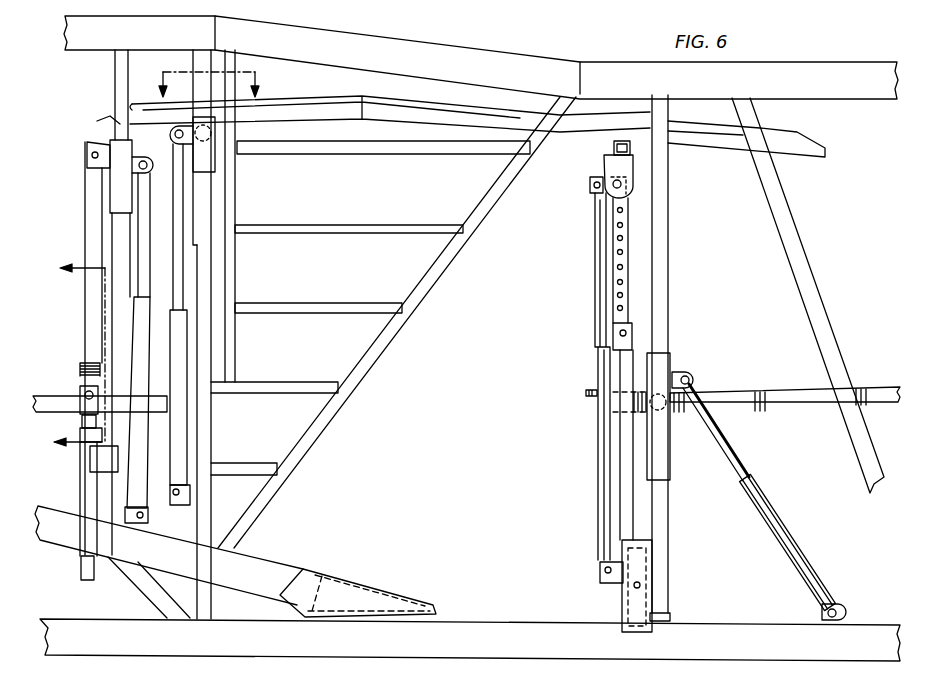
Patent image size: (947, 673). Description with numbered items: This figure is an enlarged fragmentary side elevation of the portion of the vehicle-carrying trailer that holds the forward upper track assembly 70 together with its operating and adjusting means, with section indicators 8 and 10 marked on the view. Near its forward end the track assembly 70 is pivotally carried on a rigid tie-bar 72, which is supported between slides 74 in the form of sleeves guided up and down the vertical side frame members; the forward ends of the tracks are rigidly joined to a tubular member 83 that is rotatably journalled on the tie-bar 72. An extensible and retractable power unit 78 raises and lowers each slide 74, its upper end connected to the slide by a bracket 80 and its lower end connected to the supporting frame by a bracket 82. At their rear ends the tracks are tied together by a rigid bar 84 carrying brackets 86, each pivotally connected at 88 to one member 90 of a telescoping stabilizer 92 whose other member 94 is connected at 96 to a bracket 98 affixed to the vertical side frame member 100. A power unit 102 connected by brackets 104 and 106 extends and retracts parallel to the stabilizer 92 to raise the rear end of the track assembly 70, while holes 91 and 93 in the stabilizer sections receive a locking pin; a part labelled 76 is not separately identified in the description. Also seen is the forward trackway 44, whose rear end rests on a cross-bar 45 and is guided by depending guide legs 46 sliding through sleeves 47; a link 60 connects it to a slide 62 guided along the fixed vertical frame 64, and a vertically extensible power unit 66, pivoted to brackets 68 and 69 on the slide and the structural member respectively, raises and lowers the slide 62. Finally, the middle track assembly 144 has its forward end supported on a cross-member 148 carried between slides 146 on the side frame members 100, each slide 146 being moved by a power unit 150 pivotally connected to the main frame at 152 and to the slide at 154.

The section line 8- 8 is at (207, 84).
The section line 10- 10 is at (71, 356).
The forward track assembly 44 is at (48, 400).
The cross-bar 45 is at (80, 418).
The guide legs 46 is at (80, 567).
The sleeves 47 is at (85, 520).
The link 60 is at (88, 193).
The slide 62 is at (118, 170).
The fixed vertical frame 64 is at (117, 82).
The power unit 66 is at (138, 320).
The bracket 68 is at (140, 155).
The bracket 69 is at (132, 517).
The forward upper track assembly 70 is at (410, 103).
The tie-bar 72 is at (237, 130).
The slides 74 is at (207, 210).
The lower post section 76 is at (205, 288).
The power unit 78 is at (180, 362).
The bracket 80 is at (190, 145).
The bracket 82 is at (192, 490).
The tubular member 83 is at (240, 163).
The rigid bar 84 is at (633, 148).
The brackets 86 is at (607, 163).
The pivotal connection 88 is at (613, 190).
The stabilizer member 90 is at (613, 245).
The holes 91 is at (620, 295).
The stabilizer 92 is at (640, 321).
The holes 93 is at (619, 335).
The stabilizer member 94 is at (620, 363).
The connection 96 is at (640, 585).
The bracket 98 is at (638, 605).
The vertical side frame member 100 is at (658, 235).
The power unit 102 is at (600, 423).
The bracket 104 is at (590, 185).
The bracket 106 is at (603, 582).
The middle track assembly 144 is at (777, 393).
The slides 146 is at (663, 472).
The cross-member 148 is at (672, 418).
The power unit 150 is at (763, 497).
The pivotal connection 152 is at (837, 610).
The pivotal connection 154 is at (692, 378).